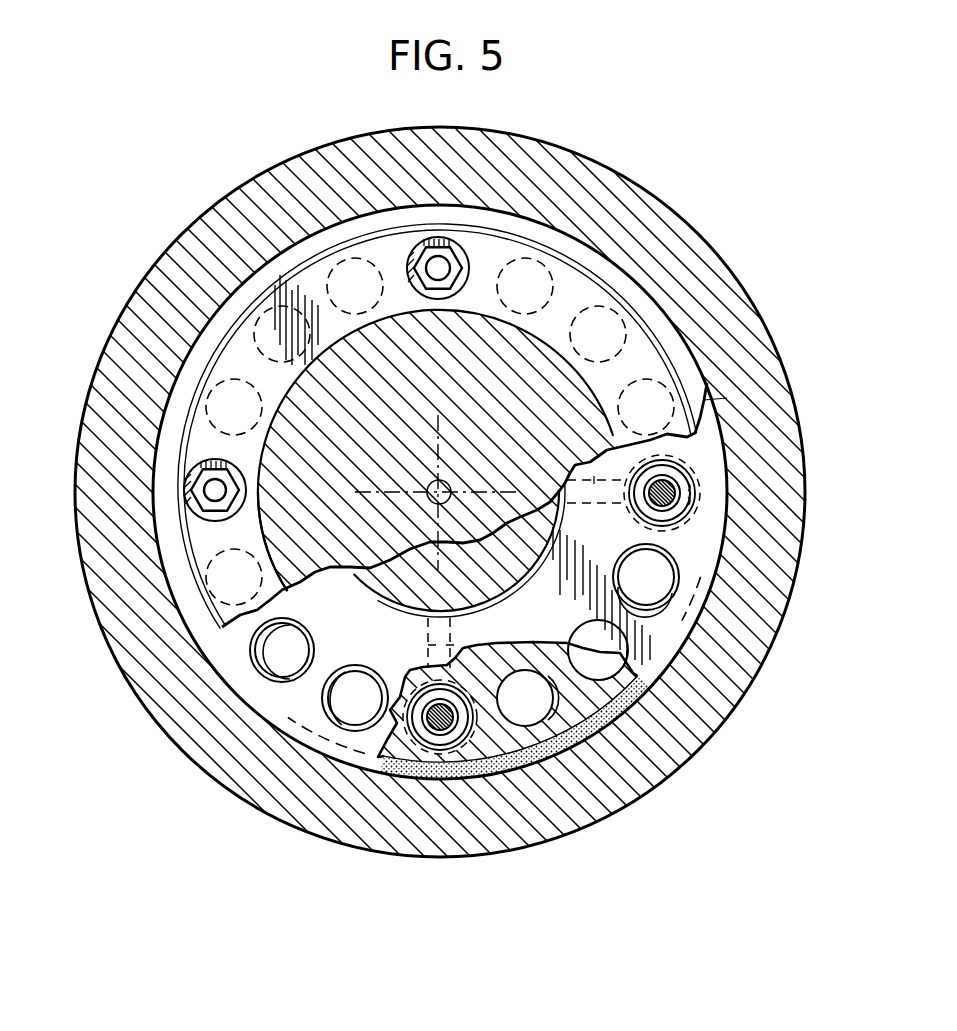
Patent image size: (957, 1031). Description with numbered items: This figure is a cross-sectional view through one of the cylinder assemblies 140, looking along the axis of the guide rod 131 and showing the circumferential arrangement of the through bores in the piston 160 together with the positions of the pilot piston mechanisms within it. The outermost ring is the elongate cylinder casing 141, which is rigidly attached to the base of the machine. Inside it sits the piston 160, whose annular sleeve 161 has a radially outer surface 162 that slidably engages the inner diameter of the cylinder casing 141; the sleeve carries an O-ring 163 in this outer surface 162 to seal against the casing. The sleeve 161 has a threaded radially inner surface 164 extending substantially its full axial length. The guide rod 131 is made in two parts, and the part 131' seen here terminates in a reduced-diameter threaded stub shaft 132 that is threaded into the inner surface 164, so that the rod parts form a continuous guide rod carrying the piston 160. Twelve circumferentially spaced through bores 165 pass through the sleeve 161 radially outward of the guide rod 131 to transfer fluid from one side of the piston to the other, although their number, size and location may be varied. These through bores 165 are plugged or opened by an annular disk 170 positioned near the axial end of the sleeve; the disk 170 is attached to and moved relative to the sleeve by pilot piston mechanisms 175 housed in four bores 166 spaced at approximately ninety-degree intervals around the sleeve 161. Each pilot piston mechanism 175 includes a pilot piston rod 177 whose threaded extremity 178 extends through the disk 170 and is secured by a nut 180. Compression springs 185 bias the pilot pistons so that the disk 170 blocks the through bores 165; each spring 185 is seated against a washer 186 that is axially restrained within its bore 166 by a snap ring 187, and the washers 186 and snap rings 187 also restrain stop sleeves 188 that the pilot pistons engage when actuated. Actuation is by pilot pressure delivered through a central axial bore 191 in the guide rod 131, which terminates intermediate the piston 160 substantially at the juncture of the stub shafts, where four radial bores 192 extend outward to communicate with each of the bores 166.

The cylinder assembly 140 is at (662, 180).
The cylinder casing 141 is at (678, 250).
The guide rod 131 is at (478, 515).
The guide rod part 131' is at (159, 557).
The threaded stub shaft 132 is at (537, 573).
The threaded radially inner surface 164 is at (377, 600).
The pilot piston mechanism 175 is at (683, 447).
The compression spring 185 is at (410, 673).
The O-ring 163 is at (540, 763).
The through bore 165 is at (205, 410).
The stop sleeve 188 is at (281, 682).
The piston 160 is at (715, 558).
The annular sleeve 161 is at (705, 592).
The annular disk 170 is at (192, 447).
The radially outer surface 162 is at (700, 475).
The nut 180 is at (432, 262).
The threaded axial extremity 178 is at (440, 266).
The pilot piston rod 177 is at (683, 478).
The bore 166 is at (700, 522).
The snap ring 187 is at (700, 497).
The washer 186 is at (643, 510).
The central axial bore 191 is at (447, 478).
The radial bore 192 is at (587, 447).